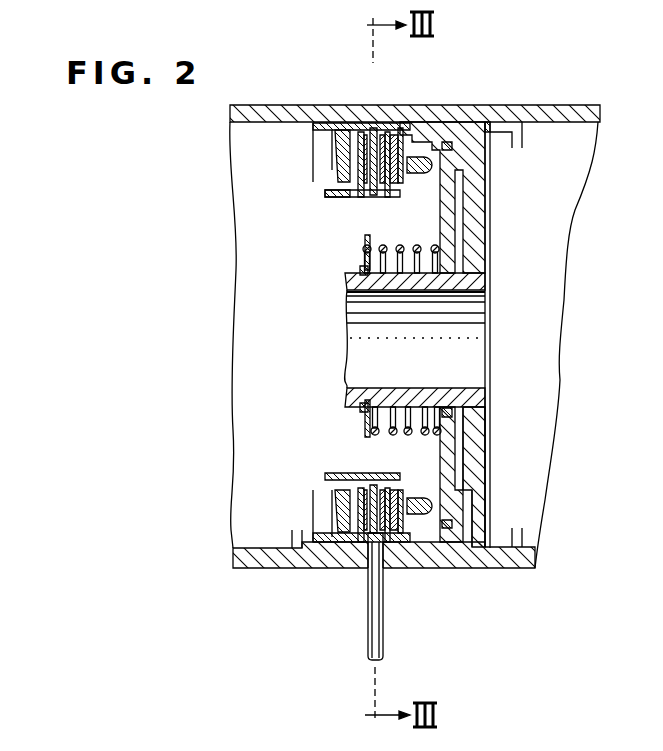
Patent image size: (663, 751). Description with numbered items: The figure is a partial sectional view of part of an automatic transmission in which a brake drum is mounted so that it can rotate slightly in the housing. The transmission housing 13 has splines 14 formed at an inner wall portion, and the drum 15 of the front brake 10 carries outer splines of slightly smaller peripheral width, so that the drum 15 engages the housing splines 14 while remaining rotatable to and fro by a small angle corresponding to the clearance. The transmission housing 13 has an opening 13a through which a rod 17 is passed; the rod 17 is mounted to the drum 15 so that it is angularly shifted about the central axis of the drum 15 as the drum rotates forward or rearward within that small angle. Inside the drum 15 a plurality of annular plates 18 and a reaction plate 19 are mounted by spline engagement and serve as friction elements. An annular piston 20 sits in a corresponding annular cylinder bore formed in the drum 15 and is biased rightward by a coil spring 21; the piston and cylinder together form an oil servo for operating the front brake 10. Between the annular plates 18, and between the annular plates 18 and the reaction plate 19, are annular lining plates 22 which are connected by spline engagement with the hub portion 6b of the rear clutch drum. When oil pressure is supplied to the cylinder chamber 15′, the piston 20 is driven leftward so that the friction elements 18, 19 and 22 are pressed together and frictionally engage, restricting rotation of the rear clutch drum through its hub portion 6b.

The hub portion 6b is at (333, 198).
The front brake 10 is at (450, 116).
The transmission housing 13 is at (552, 112).
The opening 13a is at (385, 567).
The splines 14 is at (500, 127).
The drum 15 is at (479, 164).
The cylinder chamber 15′ is at (458, 462).
The rod 17 is at (368, 612).
The annular plates 18 is at (383, 130).
The reaction plate 19 is at (342, 130).
The annular piston 20 is at (453, 222).
The coil spring 21 is at (395, 244).
The annular lining plates 22 is at (362, 134).